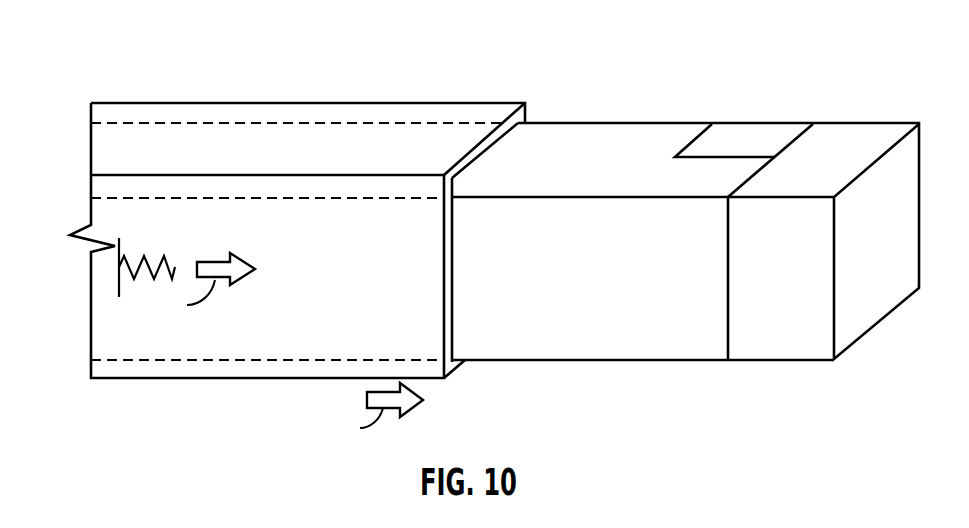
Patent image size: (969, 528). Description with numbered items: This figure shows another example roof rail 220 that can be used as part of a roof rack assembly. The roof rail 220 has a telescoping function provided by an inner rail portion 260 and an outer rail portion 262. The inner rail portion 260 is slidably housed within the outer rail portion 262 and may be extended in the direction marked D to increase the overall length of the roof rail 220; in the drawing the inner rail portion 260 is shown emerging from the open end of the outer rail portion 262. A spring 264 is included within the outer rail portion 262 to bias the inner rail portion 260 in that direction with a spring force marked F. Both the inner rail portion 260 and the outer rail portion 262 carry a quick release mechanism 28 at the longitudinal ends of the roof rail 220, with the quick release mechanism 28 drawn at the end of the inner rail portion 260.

The roof rail 220 is at (106, 58).
The outer rail portion 262 is at (332, 102).
The spring 264 is at (143, 244).
The inner rail portion 260 is at (592, 140).
The quick release mechanism 28 is at (860, 140).